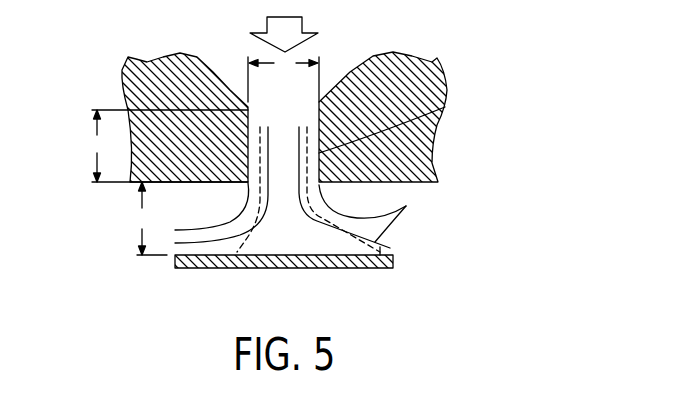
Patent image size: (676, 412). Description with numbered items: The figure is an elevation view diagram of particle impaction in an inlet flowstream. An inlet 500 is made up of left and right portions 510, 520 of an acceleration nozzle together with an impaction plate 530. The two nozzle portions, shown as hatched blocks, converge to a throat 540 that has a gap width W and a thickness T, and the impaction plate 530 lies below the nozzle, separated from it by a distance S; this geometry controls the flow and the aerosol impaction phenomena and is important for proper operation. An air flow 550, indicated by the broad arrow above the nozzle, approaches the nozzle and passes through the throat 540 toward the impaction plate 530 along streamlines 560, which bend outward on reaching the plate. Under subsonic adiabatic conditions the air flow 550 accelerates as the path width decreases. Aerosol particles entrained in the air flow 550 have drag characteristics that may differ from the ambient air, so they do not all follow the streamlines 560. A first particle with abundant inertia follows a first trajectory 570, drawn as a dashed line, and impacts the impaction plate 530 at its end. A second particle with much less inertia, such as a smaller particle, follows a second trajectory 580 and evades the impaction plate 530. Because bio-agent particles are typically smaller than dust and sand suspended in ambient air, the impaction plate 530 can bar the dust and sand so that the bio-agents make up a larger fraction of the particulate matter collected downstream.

The inlet 500 is at (466, 157).
The left portion of acceleration nozzle 510 is at (124, 78).
The right portion of acceleration nozzle 520 is at (441, 69).
The impaction plate 530 is at (393, 261).
The throat 540 is at (447, 108).
The air flow 550 is at (303, 33).
The streamlines 560 is at (400, 209).
The first trajectory 570 is at (255, 270).
The second trajectory 580 is at (369, 268).